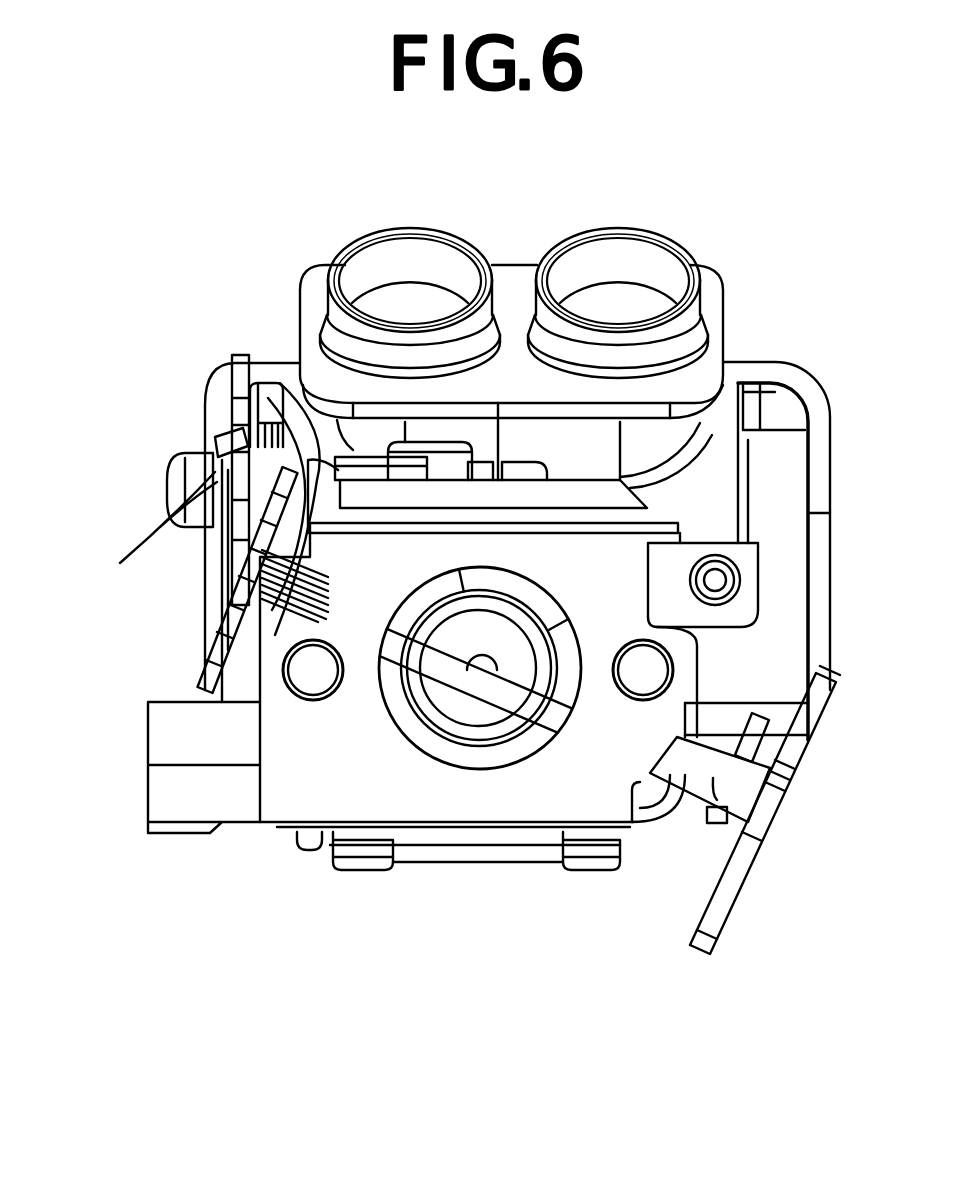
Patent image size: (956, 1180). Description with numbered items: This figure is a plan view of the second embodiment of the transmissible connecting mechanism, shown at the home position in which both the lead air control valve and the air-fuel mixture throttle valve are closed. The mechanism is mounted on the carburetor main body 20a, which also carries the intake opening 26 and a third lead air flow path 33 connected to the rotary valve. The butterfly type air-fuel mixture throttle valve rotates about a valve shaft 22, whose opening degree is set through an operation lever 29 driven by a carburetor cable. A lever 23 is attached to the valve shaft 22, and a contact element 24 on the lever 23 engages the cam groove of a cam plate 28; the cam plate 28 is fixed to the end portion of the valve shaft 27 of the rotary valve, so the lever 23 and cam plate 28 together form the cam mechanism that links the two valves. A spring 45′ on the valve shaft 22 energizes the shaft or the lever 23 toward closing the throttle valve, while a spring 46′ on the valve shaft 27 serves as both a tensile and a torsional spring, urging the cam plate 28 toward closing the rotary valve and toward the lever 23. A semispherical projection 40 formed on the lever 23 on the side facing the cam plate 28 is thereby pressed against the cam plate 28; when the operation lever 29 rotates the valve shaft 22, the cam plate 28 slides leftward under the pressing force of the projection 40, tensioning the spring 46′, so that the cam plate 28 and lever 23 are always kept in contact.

The carburetor main body 20a is at (475, 893).
The valve shaft 22 is at (708, 824).
The lever 23 is at (195, 676).
The contact element 24 is at (213, 440).
The air intake bore 26 is at (402, 292).
The valve shaft 27 is at (177, 481).
The cam plate 28 is at (236, 358).
The operation lever 29 is at (726, 897).
The third lead air flow path 33 is at (622, 292).
The projection 40 is at (120, 563).
The spring 45′ is at (217, 703).
The spring 46′ is at (271, 383).